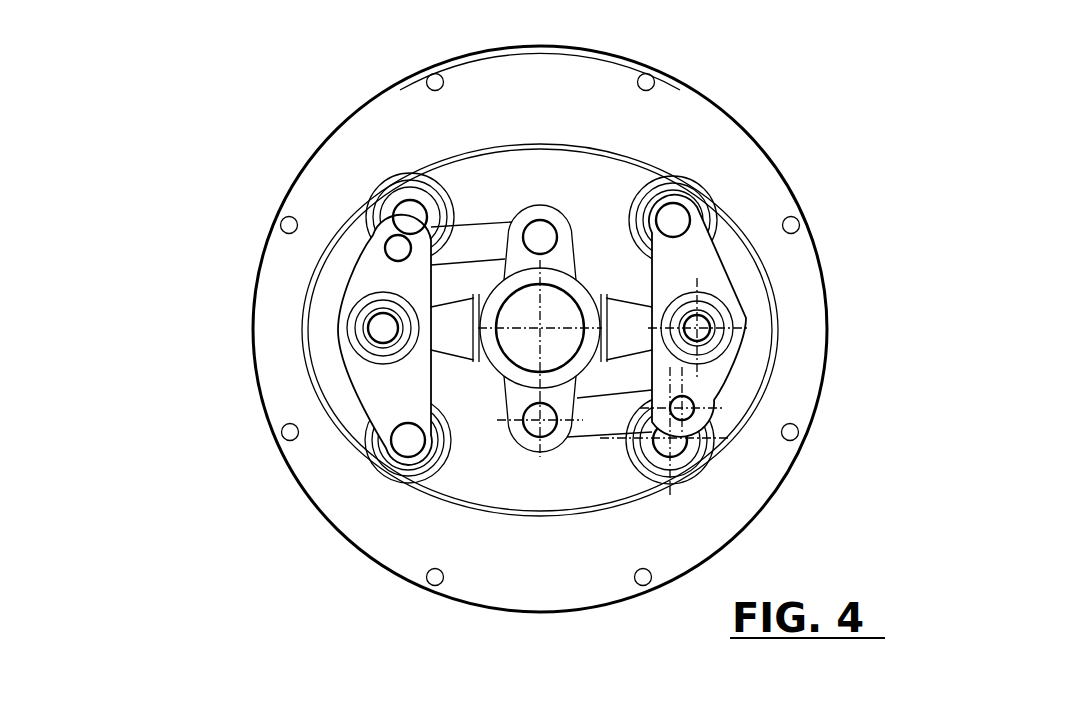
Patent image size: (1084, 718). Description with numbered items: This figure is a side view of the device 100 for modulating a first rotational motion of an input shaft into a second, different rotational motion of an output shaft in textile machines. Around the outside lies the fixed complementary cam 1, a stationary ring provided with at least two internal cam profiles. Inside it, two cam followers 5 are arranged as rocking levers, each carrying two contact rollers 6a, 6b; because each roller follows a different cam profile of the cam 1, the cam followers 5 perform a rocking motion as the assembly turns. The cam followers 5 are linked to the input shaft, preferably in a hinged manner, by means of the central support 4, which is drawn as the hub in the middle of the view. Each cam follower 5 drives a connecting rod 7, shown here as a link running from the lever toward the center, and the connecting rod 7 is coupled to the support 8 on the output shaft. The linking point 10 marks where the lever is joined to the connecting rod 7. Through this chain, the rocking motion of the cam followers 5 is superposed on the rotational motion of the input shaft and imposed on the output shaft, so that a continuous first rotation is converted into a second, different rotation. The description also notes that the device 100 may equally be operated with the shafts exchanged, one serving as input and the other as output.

The device 100 is at (165, 176).
The fixed complementary cam 1 is at (680, 117).
The support 4 is at (629, 319).
The cam follower 5 is at (700, 265).
The contact roller 6a is at (705, 212).
The contact roller 6b is at (393, 190).
The connecting rod 7 is at (478, 233).
The support 8 is at (510, 391).
The linking point 10 is at (695, 403).